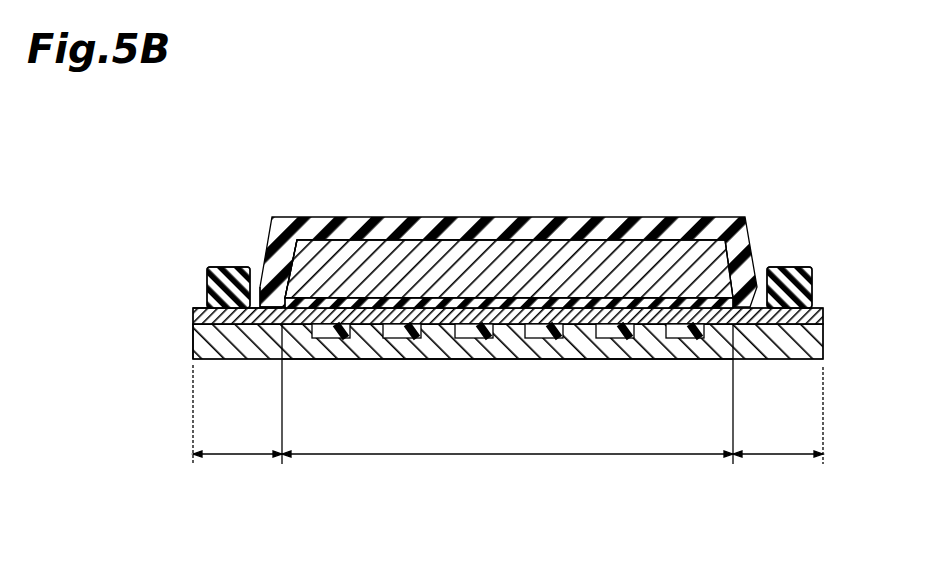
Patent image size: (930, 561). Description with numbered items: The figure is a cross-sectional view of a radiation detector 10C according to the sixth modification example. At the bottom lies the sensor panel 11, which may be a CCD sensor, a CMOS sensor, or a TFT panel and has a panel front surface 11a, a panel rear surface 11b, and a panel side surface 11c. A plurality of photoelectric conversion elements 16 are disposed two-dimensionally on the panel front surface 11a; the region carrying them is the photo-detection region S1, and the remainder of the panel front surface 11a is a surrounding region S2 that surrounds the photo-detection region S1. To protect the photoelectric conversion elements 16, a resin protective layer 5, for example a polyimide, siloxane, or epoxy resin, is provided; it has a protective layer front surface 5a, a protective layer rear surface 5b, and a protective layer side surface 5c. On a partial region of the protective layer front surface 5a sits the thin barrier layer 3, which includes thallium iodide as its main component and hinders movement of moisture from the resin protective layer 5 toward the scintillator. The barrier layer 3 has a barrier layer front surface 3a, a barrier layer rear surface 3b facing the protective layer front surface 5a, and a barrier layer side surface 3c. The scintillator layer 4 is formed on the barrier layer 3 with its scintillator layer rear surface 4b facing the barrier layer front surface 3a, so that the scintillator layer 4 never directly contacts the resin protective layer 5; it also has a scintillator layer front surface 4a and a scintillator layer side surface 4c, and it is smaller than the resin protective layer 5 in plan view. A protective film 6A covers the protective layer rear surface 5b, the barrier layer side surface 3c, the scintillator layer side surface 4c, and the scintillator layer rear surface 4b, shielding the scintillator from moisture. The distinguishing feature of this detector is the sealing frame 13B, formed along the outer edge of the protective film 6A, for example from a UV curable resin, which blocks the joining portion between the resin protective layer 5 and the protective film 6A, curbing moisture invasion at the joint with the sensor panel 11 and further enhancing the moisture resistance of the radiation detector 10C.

The radiation detector 10C is at (614, 133).
The protective film 6A is at (719, 213).
The scintillator layer 4 is at (748, 258).
The scintillator layer front surface 4a is at (428, 300).
The scintillator layer rear surface 4b is at (497, 300).
The scintillator layer side surface 4c is at (274, 250).
The barrier layer 3 is at (758, 292).
The barrier layer front surface 3a is at (363, 302).
The barrier layer rear surface 3b is at (357, 302).
The barrier layer side surface 3c is at (267, 306).
The resin protective layer 5 is at (830, 318).
The protective layer front surface 5a is at (507, 313).
The protective layer rear surface 5b is at (498, 310).
The protective layer side surface 5c is at (193, 319).
The sensor panel 11 is at (830, 342).
The panel front surface 11a is at (200, 305).
The panel rear surface 11b is at (700, 359).
The panel side surface 11c is at (193, 342).
The sealing frame 13B is at (214, 265).
The photoelectric conversion element 16 is at (615, 340).
The photo-detection region S1 is at (508, 457).
The surrounding region S2 is at (240, 457).